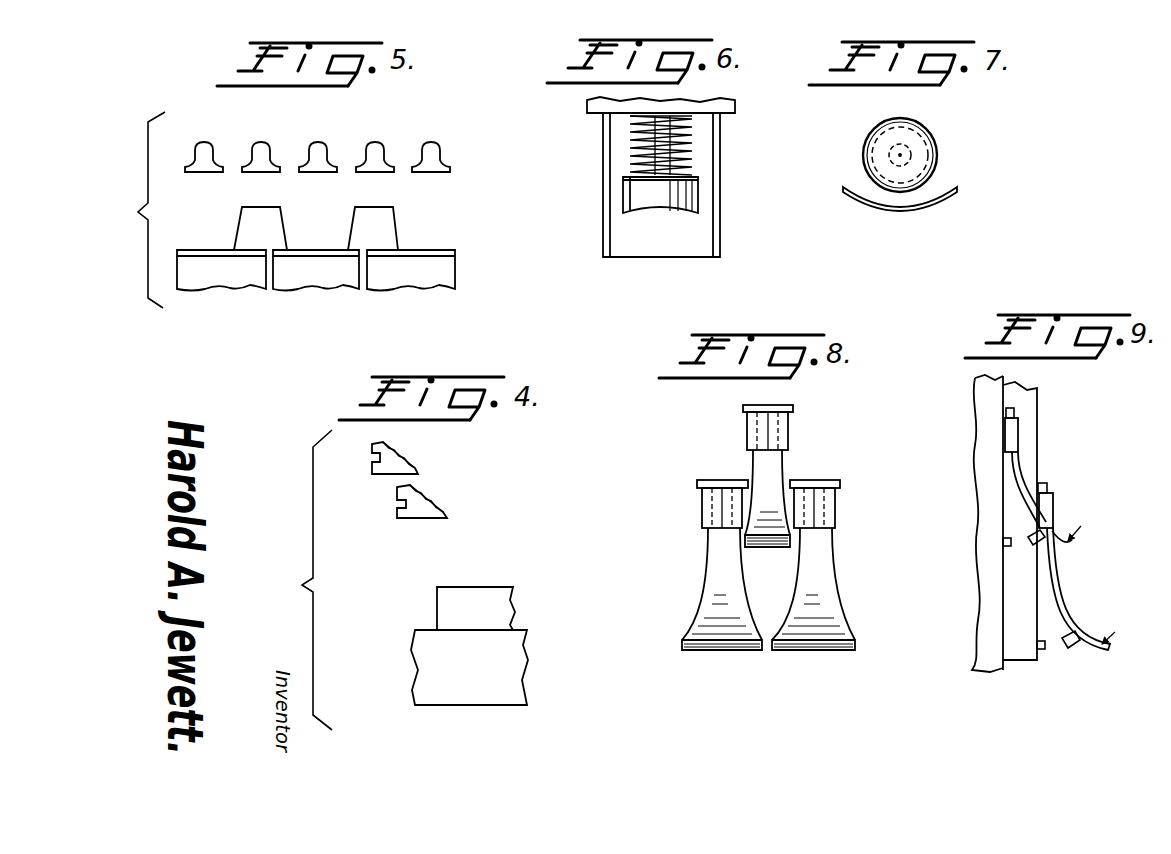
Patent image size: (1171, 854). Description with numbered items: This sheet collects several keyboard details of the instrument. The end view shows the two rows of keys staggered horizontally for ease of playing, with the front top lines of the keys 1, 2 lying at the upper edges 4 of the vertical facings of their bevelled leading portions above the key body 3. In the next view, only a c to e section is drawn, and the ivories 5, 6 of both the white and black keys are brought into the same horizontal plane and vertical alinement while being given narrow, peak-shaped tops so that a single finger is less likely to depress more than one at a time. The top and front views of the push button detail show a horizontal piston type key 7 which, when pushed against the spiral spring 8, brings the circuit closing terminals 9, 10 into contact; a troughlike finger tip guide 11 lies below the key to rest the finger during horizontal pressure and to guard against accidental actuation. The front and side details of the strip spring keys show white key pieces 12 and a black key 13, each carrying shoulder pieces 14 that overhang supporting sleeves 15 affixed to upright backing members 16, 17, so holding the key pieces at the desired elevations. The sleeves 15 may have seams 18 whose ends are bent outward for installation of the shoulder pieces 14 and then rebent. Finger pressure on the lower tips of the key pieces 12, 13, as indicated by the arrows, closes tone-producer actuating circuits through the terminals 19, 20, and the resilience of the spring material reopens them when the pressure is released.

In FIG. 4, the key 1 is at (406, 504).
In FIG. 4, the key 2 is at (380, 458).
In FIG. 5, the blank strip 3 is at (421, 233).
In FIG. 4, the blank strip 3 is at (532, 618).
In FIG. 4, the upper edges 4 is at (416, 469).
In FIG. 5, the ivory 5 is at (214, 126).
In FIG. 5, the ivory 6 is at (271, 126).
In FIG. 6, the key 7 is at (633, 195).
In FIG. 7, the key 7 is at (935, 162).
In FIG. 6, the spiral spring 8 is at (673, 148).
In FIG. 7, the spiral spring 8 is at (928, 145).
In FIG. 6, the circuit closing terminal 9 is at (647, 153).
In FIG. 7, the circuit closing terminal 9 is at (882, 155).
In FIG. 6, the circuit closing terminal 10 is at (637, 125).
In FIG. 6, the finger tip guide 11 is at (708, 242).
In FIG. 7, the finger tip guide 11 is at (897, 207).
In FIG. 8, the white key pieces 12 is at (798, 589).
In FIG. 9, the white key pieces 12 is at (1070, 605).
In FIG. 8, the black key 13 is at (783, 463).
In FIG. 9, the black key 13 is at (1025, 470).
In FIG. 8, the shoulder pieces 14 is at (795, 410).
In FIG. 9, the shoulder pieces 14 is at (1015, 410).
In FIG. 8, the supporting sleeves 15 is at (747, 430).
In FIG. 9, the supporting sleeves 15 is at (1020, 436).
In FIG. 9, the upright backing member 16 is at (1040, 519).
In FIG. 9, the upright backing member 17 is at (1003, 428).
In FIG. 8, the seams 18 is at (775, 433).
In FIG. 9, the terminal 19 is at (1030, 538).
In FIG. 9, the terminal 20 is at (1003, 541).